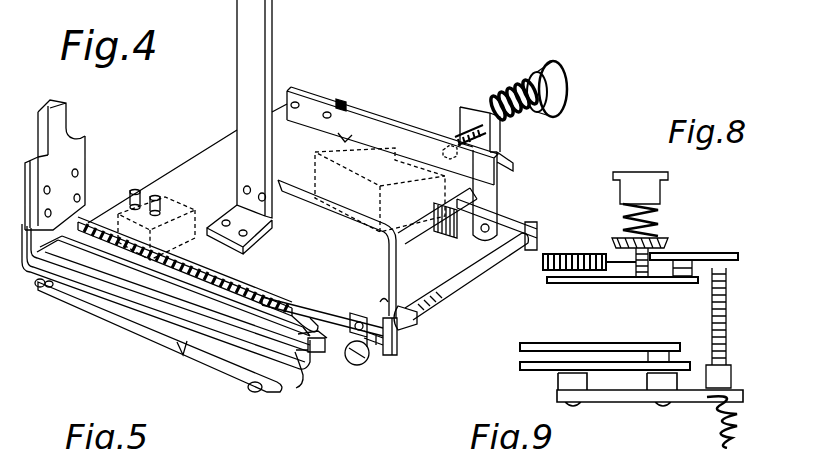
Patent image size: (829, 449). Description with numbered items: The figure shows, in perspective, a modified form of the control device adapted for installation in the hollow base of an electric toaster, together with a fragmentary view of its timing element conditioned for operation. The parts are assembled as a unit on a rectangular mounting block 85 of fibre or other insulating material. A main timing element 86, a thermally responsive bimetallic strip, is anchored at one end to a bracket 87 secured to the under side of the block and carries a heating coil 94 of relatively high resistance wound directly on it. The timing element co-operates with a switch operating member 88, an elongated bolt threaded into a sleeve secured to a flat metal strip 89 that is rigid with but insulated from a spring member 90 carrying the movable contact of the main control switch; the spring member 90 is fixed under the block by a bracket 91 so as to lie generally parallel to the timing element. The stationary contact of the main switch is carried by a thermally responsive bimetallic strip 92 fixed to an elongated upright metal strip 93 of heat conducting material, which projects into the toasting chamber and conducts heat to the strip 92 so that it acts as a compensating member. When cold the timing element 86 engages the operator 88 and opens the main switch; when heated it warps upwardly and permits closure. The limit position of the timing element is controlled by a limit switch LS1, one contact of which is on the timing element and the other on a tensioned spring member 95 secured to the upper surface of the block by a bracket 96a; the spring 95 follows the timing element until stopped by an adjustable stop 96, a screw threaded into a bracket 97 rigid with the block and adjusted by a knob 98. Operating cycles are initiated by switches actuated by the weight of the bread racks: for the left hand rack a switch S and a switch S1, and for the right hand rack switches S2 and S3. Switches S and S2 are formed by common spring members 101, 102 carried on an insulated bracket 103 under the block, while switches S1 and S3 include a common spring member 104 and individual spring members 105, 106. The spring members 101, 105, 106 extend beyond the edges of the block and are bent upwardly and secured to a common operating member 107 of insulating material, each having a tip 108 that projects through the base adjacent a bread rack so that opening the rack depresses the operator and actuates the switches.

In FIG. 4, the mounting block 85 is at (205, 157).
In FIG. 4, the main timing element 86 is at (537, 242).
In FIG. 8, the main timing element 86 is at (722, 252).
In FIG. 4, the bracket 87 is at (320, 152).
In FIG. 4, the switch operating member 88 is at (468, 278).
In FIG. 8, the switch operating member 88 is at (727, 310).
In FIG. 4, the flat metal strip 89 is at (385, 348).
In FIG. 8, the flat metal strip 89 is at (632, 402).
In FIG. 4, the spring member 90 is at (330, 290).
In FIG. 8, the spring member 90 is at (545, 374).
In FIG. 4, the bracket 91 is at (125, 208).
In FIG. 4, the bimetallic strip 92 is at (392, 268).
In FIG. 8, the bimetallic strip 92 is at (597, 342).
In FIG. 4, the upright metal strip 93 is at (240, 84).
In FIG. 4, the heating coil 94 is at (444, 232).
In FIG. 8, the heating coil 94 is at (600, 256).
In FIG. 4, the tensioned spring member 95 is at (411, 131).
In FIG. 8, the tensioned spring member 95 is at (612, 285).
In FIG. 4, the adjustable stop 96 is at (470, 118).
In FIG. 4, the bracket 96a is at (332, 99).
In FIG. 4, the bracket 97 is at (501, 133).
In FIG. 8, the bracket 97 is at (660, 244).
In FIG. 4, the knob 98 is at (568, 94).
In FIG. 8, the knob 98 is at (668, 180).
In FIG. 4, the spring member 101 is at (97, 298).
In FIG. 4, the spring member 102 is at (213, 362).
In FIG. 4, the insulated bracket 103 is at (127, 318).
In FIG. 4, the common spring member 104 is at (240, 293).
In FIG. 4, the spring member 105 is at (147, 275).
In FIG. 4, the spring member 106 is at (303, 378).
In FIG. 4, the operating member 107 is at (80, 156).
In FIG. 4, the tip 108 is at (60, 118).
In FIG. 4, the switch S is at (40, 288).
In FIG. 4, the switch S1 is at (103, 222).
In FIG. 4, the switch S2 is at (250, 389).
In FIG. 4, the switch S3 is at (312, 355).
In FIG. 4, the limit switch LS1 is at (509, 228).
In FIG. 8, the limit switch LS1 is at (667, 277).